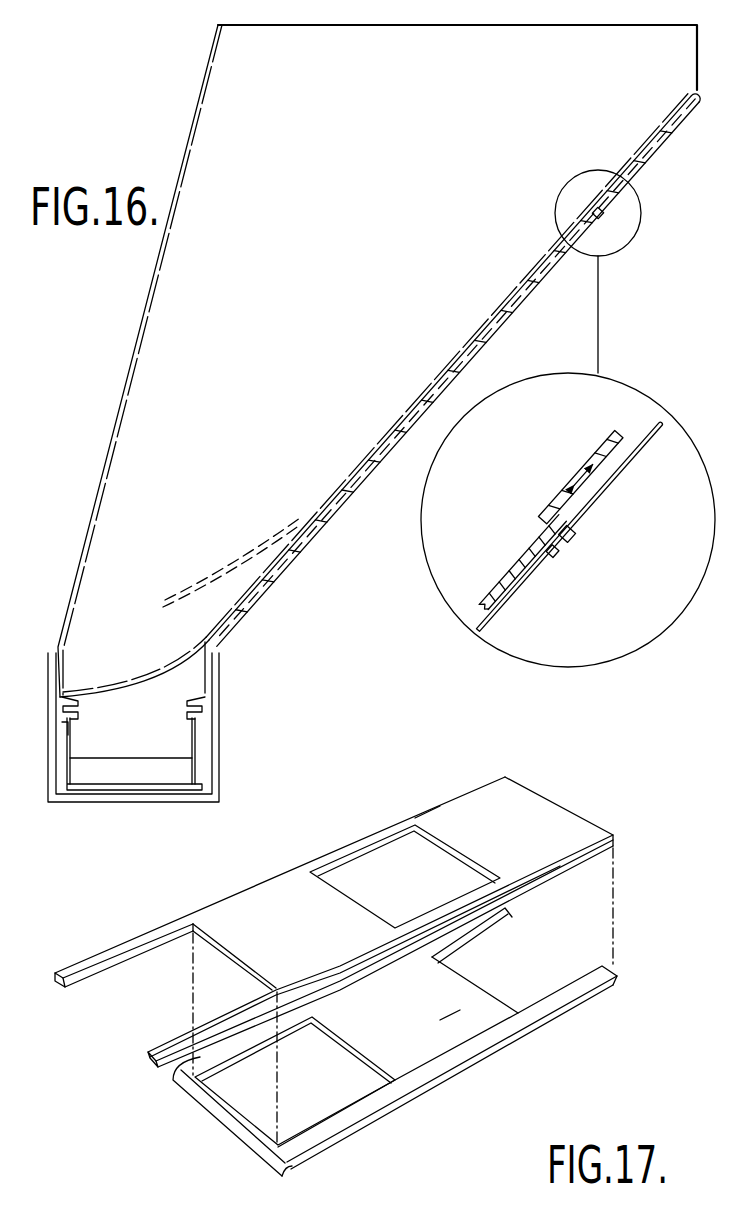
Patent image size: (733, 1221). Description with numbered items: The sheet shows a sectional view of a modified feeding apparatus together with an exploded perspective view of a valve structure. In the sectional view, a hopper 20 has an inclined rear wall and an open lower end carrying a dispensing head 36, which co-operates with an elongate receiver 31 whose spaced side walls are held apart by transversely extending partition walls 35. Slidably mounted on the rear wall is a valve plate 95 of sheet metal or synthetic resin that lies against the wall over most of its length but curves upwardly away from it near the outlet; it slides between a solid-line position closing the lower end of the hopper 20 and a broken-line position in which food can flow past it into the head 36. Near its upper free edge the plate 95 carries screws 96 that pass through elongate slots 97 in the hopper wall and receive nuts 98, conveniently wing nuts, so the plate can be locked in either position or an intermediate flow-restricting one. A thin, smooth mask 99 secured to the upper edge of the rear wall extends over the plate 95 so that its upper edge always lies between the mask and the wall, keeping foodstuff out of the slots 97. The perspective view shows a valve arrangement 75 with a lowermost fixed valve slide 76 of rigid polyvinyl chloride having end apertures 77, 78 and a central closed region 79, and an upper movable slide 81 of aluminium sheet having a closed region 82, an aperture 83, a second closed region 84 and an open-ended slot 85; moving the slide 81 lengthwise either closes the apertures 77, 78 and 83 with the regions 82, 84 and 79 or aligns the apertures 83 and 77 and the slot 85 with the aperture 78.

In FIG. 16, the hopper 20 is at (258, 148).
In FIG. 16, the elongate receiver 31 is at (66, 746).
In FIG. 16, the partition wall 35 is at (127, 765).
In FIG. 16, the dispensing head 36 is at (213, 734).
In FIG. 16, the valve plate 95 is at (253, 588).
In FIG. 16, the screw 96 is at (580, 528).
In FIG. 16, the elongate slot 97 is at (630, 456).
In FIG. 16, the nut 98 is at (553, 558).
In FIG. 16, the mask 99 is at (454, 350).
In FIG. 17, the valve arrangement 75 is at (334, 897).
In FIG. 17, the fixed valve slide 76 is at (375, 1042).
In FIG. 17, the aperture 77 is at (525, 972).
In FIG. 17, the aperture 78 is at (252, 1085).
In FIG. 17, the closed region 79 is at (442, 998).
In FIG. 17, the movable slide 81 is at (422, 808).
In FIG. 17, the closed region 82 is at (515, 835).
In FIG. 17, the aperture 83 is at (378, 872).
In FIG. 17, the second closed region 84 is at (270, 938).
In FIG. 17, the aperture 85 is at (138, 988).